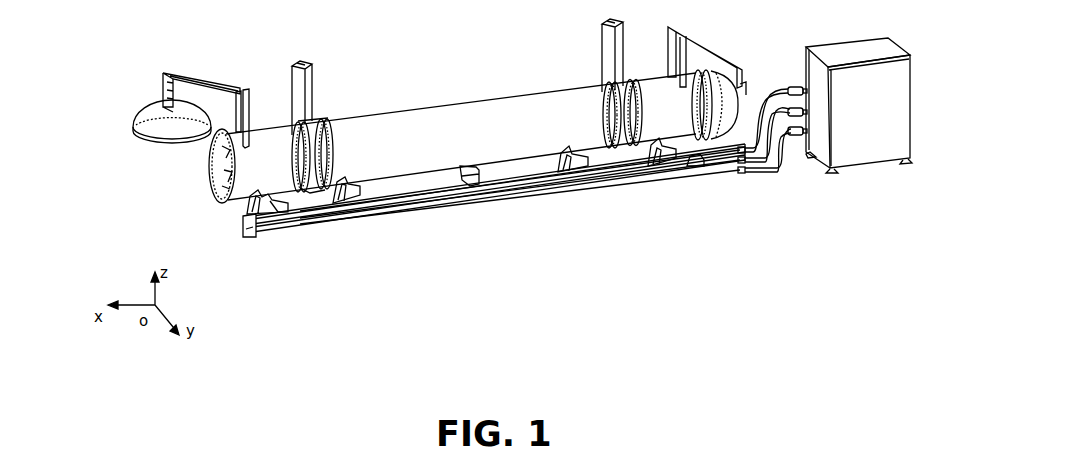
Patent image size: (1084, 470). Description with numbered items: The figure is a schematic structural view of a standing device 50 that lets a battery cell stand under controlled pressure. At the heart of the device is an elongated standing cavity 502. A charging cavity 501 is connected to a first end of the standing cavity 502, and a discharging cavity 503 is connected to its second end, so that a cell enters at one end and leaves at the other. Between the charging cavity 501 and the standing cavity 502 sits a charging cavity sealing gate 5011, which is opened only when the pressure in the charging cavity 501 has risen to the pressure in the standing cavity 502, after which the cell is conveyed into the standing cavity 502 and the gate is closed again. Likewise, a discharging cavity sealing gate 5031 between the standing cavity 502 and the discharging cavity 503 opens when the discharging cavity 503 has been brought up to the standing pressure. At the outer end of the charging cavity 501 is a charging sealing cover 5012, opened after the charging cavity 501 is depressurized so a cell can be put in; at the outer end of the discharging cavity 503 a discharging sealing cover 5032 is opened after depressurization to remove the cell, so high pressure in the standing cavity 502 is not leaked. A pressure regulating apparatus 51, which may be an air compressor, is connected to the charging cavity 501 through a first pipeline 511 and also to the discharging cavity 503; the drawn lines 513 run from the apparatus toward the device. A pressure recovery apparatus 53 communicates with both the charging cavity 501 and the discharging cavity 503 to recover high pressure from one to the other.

The standing device 50 is at (458, 26).
The pressure regulating apparatus 51 is at (868, 112).
The pressure recovery apparatus 53 is at (404, 207).
The charging cavity 501 is at (258, 174).
The standing cavity 502 is at (426, 127).
The discharging cavity 503 is at (673, 115).
The first pipeline 511 is at (268, 236).
The cable 513 is at (786, 86).
The charging cavity sealing gate 5011 is at (307, 193).
The charging sealing cover 5012 is at (157, 137).
The discharging cavity sealing gate 5031 is at (632, 122).
The discharging sealing cover 5032 is at (717, 124).